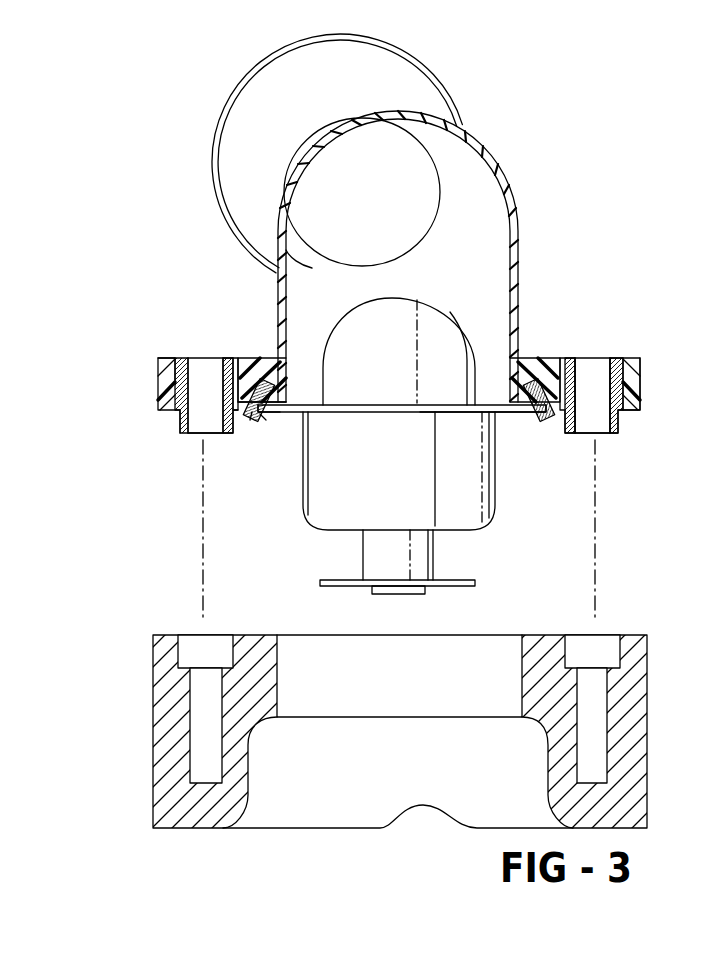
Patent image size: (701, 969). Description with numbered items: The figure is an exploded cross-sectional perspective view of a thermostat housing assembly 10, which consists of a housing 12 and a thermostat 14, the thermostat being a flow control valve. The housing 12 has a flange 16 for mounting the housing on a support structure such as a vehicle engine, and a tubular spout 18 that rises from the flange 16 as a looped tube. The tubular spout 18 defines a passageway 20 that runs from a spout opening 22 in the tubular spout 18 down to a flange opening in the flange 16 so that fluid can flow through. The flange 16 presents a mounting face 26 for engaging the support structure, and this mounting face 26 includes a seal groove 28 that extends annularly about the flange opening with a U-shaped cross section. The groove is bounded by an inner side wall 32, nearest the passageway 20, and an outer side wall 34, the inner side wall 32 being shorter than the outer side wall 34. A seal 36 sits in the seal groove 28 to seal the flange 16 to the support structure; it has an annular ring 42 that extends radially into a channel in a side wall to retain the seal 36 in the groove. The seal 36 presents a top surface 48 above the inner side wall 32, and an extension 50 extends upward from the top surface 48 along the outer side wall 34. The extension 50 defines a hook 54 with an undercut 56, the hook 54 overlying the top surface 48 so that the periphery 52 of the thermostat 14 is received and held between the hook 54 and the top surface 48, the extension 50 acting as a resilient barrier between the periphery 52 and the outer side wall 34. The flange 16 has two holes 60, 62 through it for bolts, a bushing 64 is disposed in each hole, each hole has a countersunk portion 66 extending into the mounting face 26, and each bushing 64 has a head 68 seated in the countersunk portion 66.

The thermostat housing assembly 10 is at (102, 273).
The housing 12 is at (412, 104).
The thermostat 14 is at (351, 493).
The flange 16 is at (160, 388).
The tubular spout 18 is at (254, 134).
The passageway 20 is at (306, 276).
The spout opening 22 is at (431, 190).
The mounting face 26 is at (632, 410).
The seal groove 28 is at (260, 376).
The inner side wall 32 is at (278, 372).
The outer side wall 34 is at (244, 372).
The seal 36 is at (538, 378).
The annular ring 42 is at (249, 408).
The top surface 48 is at (262, 410).
The extension 50 is at (253, 415).
The periphery 52 is at (532, 413).
The hook 54 is at (259, 418).
The undercut 56 is at (266, 418).
The hole 60 is at (163, 376).
The hole 62 is at (642, 395).
The bushing 64 is at (606, 408).
The countersunk portion 66 is at (176, 370).
The head 68 is at (203, 363).